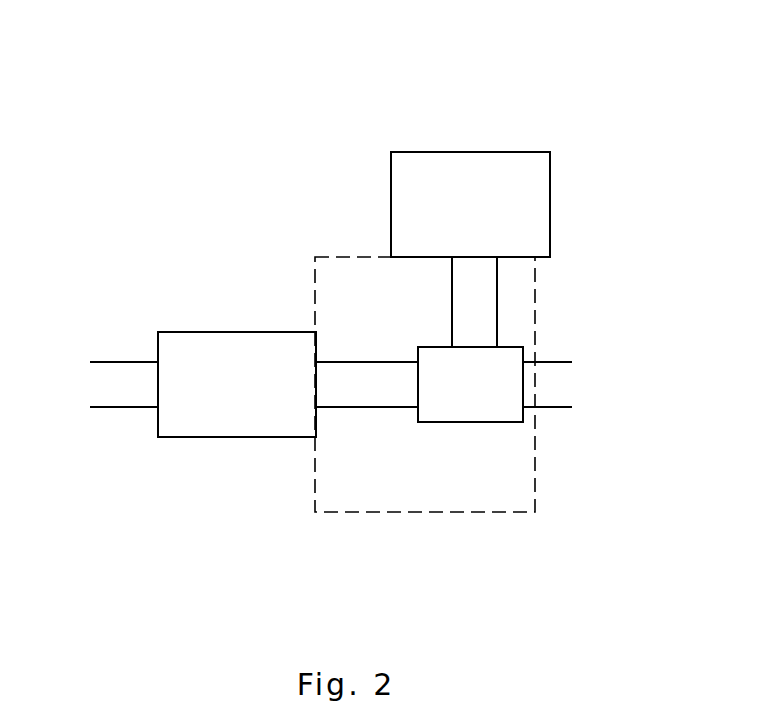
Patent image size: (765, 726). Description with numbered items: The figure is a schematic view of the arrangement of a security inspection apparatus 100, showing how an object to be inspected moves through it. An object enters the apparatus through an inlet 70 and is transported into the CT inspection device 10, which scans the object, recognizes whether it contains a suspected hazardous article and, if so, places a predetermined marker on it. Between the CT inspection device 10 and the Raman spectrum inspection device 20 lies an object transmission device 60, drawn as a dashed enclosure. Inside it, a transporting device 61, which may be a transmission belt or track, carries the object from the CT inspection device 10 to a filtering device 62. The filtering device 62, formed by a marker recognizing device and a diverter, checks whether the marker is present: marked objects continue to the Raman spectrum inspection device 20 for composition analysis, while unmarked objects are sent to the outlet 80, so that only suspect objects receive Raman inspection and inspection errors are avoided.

The security inspection apparatus 100 is at (248, 32).
The CT inspection device 10 is at (237, 384).
The Raman spectrum inspection device 20 is at (470, 204).
The object transmission device 60 is at (353, 513).
The transporting device 61 is at (377, 407).
The filtering device 62 is at (470, 339).
The inlet 70 is at (90, 392).
The outlet 80 is at (575, 388).